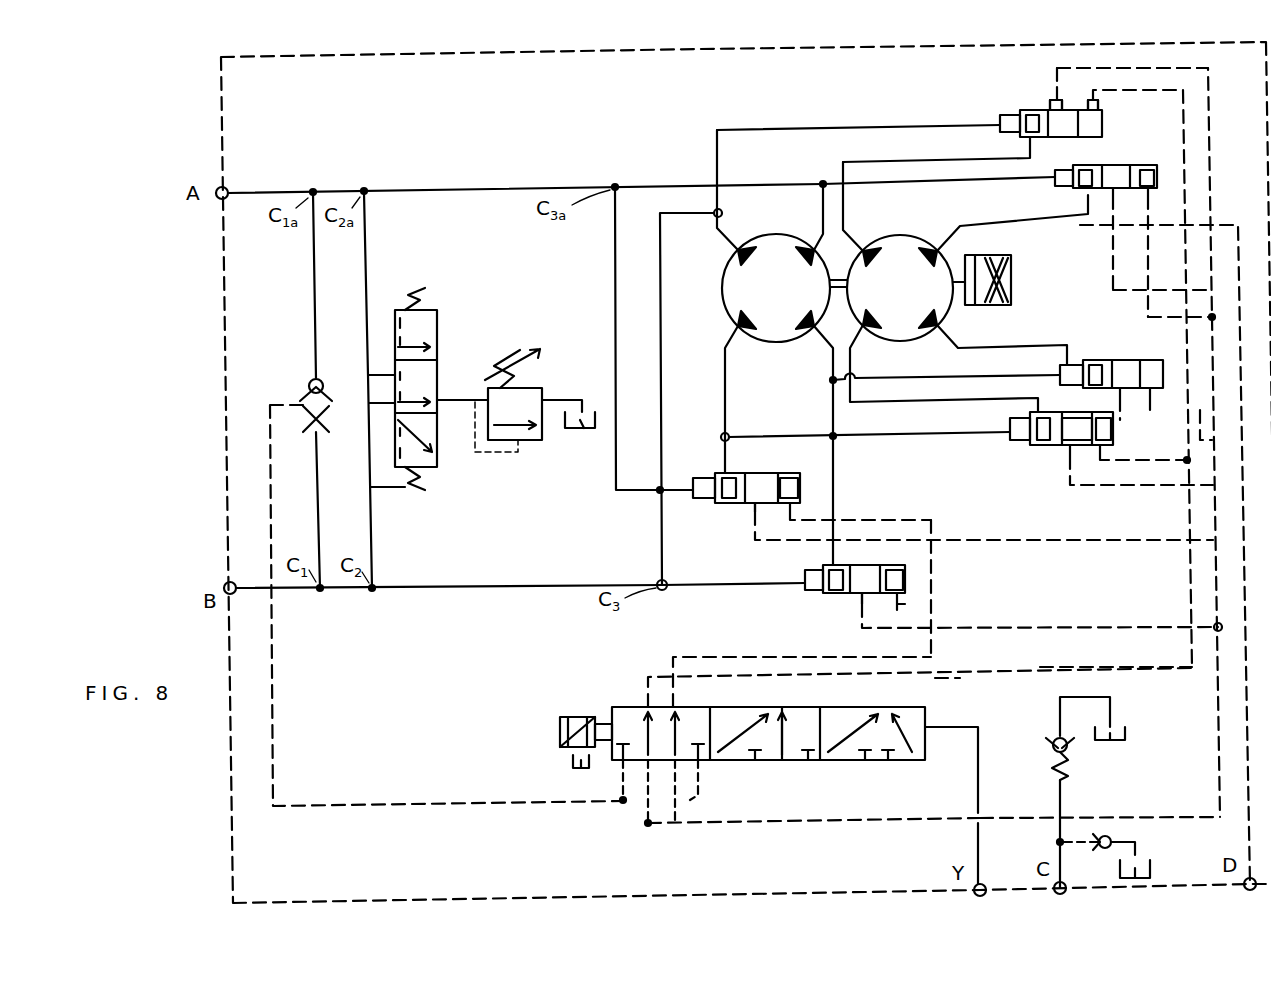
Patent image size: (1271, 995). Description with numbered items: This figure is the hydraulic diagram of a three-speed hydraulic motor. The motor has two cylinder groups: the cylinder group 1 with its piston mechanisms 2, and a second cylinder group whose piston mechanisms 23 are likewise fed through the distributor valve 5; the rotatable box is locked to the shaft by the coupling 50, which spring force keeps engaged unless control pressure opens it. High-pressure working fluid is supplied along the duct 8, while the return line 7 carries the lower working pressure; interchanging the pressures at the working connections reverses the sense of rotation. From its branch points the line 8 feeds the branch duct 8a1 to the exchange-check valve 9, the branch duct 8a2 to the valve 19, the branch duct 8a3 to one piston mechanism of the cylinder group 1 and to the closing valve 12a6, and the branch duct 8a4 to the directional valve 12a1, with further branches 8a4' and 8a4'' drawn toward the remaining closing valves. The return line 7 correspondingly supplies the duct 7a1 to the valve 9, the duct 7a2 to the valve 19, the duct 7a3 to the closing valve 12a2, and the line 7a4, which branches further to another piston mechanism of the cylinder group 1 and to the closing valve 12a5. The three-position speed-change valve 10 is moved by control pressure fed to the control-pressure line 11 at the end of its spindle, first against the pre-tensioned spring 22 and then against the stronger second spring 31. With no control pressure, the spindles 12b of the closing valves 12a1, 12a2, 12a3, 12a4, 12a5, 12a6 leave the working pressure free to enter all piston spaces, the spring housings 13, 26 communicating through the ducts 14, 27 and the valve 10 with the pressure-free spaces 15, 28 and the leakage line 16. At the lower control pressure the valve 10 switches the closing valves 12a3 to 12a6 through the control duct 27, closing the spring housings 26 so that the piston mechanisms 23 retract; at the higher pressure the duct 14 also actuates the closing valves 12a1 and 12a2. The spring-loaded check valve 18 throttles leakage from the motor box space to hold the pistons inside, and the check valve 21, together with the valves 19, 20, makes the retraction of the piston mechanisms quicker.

The cylinder group 1 is at (752, 288).
The piston mechanism 2 is at (776, 288).
The distributor valve 5 is at (715, 268).
The return line 7 is at (466, 188).
The duct 7a1 is at (312, 338).
The duct 7a2 is at (370, 272).
The duct 7a3 is at (612, 272).
The line 7a4 is at (640, 182).
The duct 8 is at (506, 594).
The branch duct 8a1 is at (317, 482).
The branch duct 8a2 is at (374, 506).
The branch duct 8a3 is at (666, 432).
The branch duct 8a4 is at (848, 476).
The return branch line 8a4' is at (793, 445).
The return branch line 8a4'' is at (946, 362).
The exchange-check valve 9 is at (328, 430).
The speed-change valve 10 is at (630, 707).
The control-pressure line 11 is at (976, 790).
The closing valve 12a1 is at (815, 568).
The closing valve 12a2 is at (750, 478).
The closing valve 12a3 is at (997, 427).
The closing valve 12a4 is at (1077, 348).
The closing valve 12a5 is at (1044, 196).
The closing valve 12a6 is at (992, 143).
The spindle 12b is at (1065, 444).
The spring housing 13 is at (805, 488).
The duct 14 is at (668, 663).
The pressure-free space 15 is at (752, 520).
The leakage duct 16 is at (790, 825).
The spring-loaded check valve 18 is at (1054, 738).
The valve 19 is at (440, 345).
The valve 20 is at (540, 350).
The check valve 21 is at (1110, 836).
The first pre-tensioned spring 22 is at (604, 724).
The piston mechanism 23 is at (862, 215).
The spring housing 26 is at (1100, 112).
The control duct 27 is at (948, 688).
The pressure-free space 28 is at (1060, 85).
The second spring 31 is at (556, 730).
The coupling 50 is at (1013, 266).